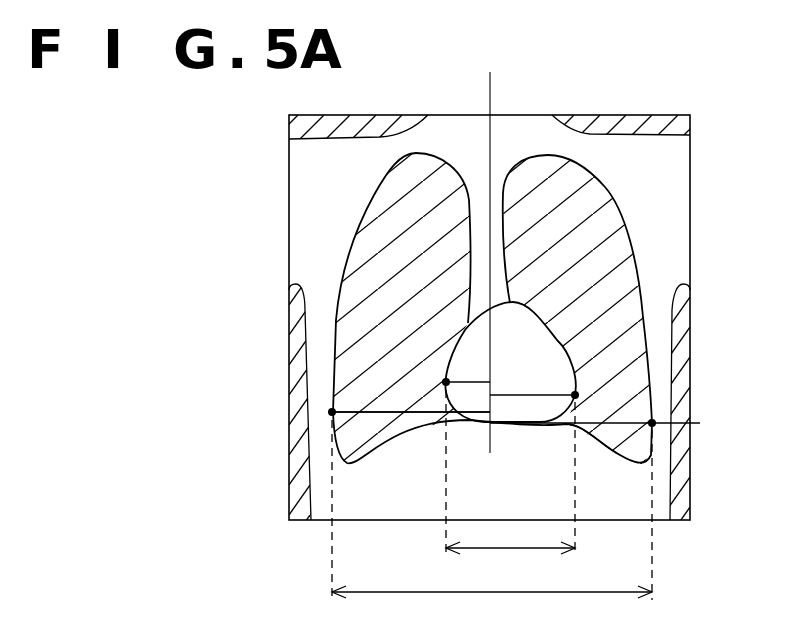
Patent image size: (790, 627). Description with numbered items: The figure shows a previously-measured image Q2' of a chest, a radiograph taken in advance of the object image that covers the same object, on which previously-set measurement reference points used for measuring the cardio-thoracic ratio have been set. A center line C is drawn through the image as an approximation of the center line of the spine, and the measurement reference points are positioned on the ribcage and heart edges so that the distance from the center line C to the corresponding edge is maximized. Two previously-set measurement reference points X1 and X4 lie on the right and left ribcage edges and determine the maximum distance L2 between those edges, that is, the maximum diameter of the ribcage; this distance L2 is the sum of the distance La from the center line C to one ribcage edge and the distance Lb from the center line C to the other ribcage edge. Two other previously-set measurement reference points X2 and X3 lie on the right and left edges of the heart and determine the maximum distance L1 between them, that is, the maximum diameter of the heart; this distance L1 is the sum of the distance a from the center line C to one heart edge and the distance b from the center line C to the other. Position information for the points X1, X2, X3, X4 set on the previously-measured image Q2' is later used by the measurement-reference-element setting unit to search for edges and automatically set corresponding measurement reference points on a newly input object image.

The previously-measured image Q2' is at (447, 317).
The center line C is at (489, 246).
The previously-set measurement reference point X1 is at (397, 496).
The previously-set measurement reference point X2 is at (429, 460).
The previously-set measurement reference point X3 is at (592, 465).
The previously-set measurement reference point X4 is at (614, 495).
The distance a is at (468, 370).
The distance b is at (532, 385).
The distance La is at (411, 403).
The distance Lb is at (591, 426).
The maximum distance between the right and left edges of the heart L1 is at (510, 541).
The maximum distance between the right and left ribcage edges L2 is at (492, 583).